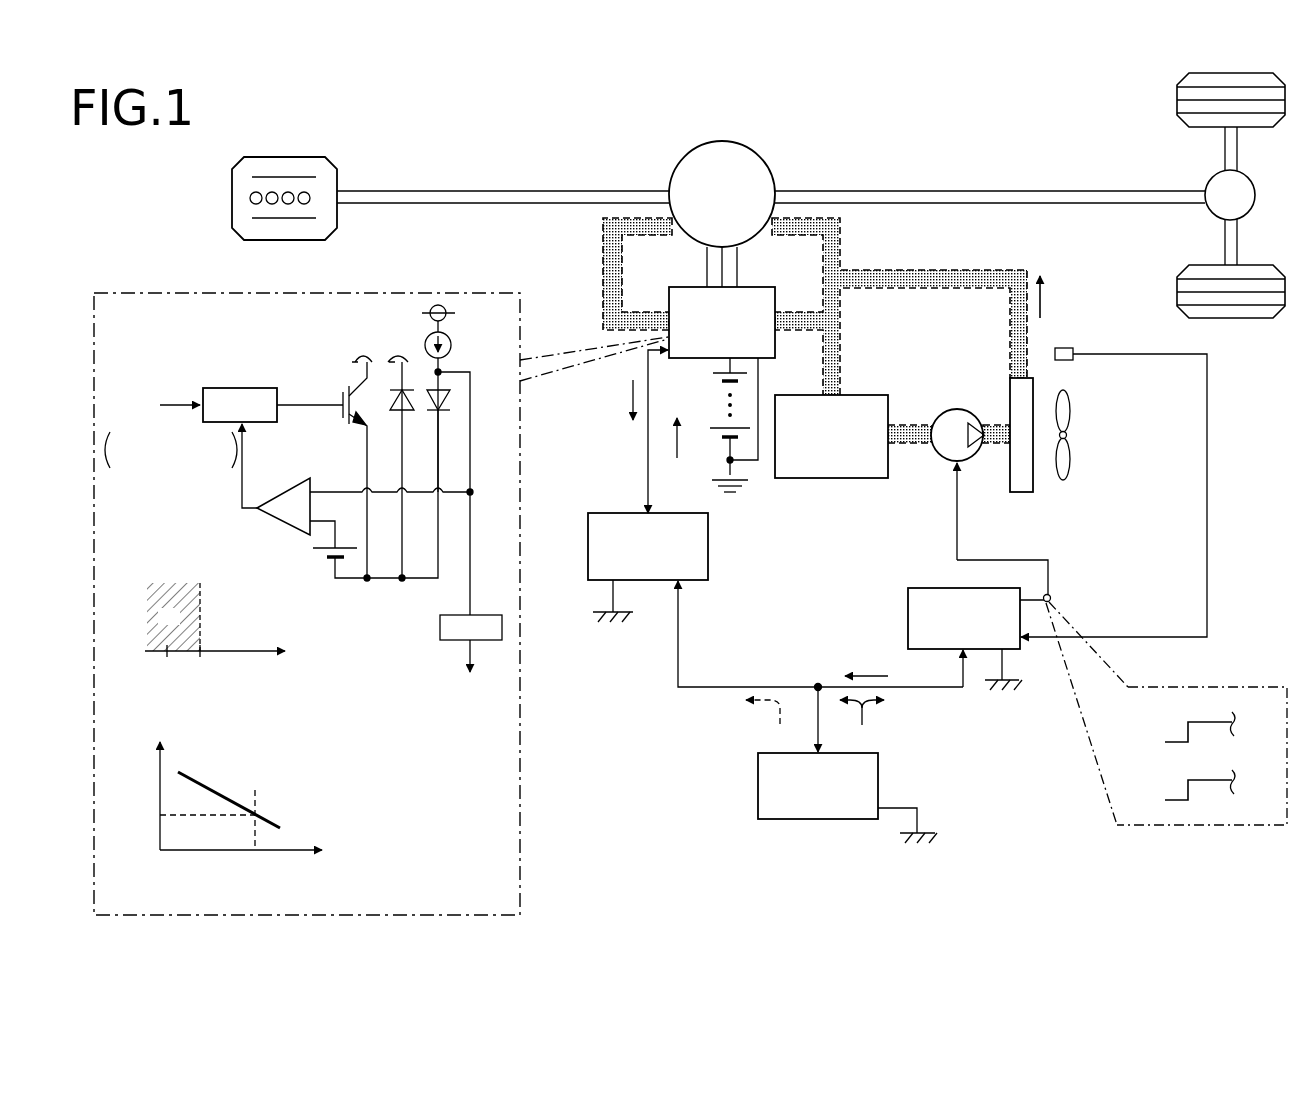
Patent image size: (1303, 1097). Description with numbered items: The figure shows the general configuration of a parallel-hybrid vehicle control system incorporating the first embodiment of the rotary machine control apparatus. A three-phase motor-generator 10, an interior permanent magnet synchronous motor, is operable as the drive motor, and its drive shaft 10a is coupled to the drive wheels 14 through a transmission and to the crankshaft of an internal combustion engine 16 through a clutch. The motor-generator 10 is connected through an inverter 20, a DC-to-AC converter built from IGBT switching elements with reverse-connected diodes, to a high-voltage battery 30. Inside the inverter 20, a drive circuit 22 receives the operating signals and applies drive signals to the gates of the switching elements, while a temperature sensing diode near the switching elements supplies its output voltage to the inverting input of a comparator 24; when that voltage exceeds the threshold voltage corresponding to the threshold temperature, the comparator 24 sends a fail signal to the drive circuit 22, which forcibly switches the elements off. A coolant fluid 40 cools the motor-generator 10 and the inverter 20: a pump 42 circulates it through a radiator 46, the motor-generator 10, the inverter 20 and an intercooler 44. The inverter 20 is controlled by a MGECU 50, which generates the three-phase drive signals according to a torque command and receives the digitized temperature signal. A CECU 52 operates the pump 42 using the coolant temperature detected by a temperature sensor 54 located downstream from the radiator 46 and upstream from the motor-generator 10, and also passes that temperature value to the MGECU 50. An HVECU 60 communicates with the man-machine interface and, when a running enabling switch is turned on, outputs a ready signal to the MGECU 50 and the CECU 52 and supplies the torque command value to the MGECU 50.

The motor-generator 10 is at (745, 147).
The drive shaft 10a is at (872, 190).
The drive wheels 14 is at (1177, 100).
The internal combustion engine 16 is at (285, 157).
The inverter 20 is at (752, 287).
The drive circuit 22 is at (226, 388).
The comparator 24 is at (288, 478).
The high-voltage battery 30 is at (713, 373).
The coolant fluid 40 is at (603, 258).
The pump 42 is at (957, 409).
The intercooler 44 is at (866, 395).
The radiator 46 is at (1020, 492).
The MGECU 50 is at (708, 548).
The CECU 52 is at (908, 600).
The temperature sensor 54 is at (1064, 360).
The HVECU 60 is at (758, 777).